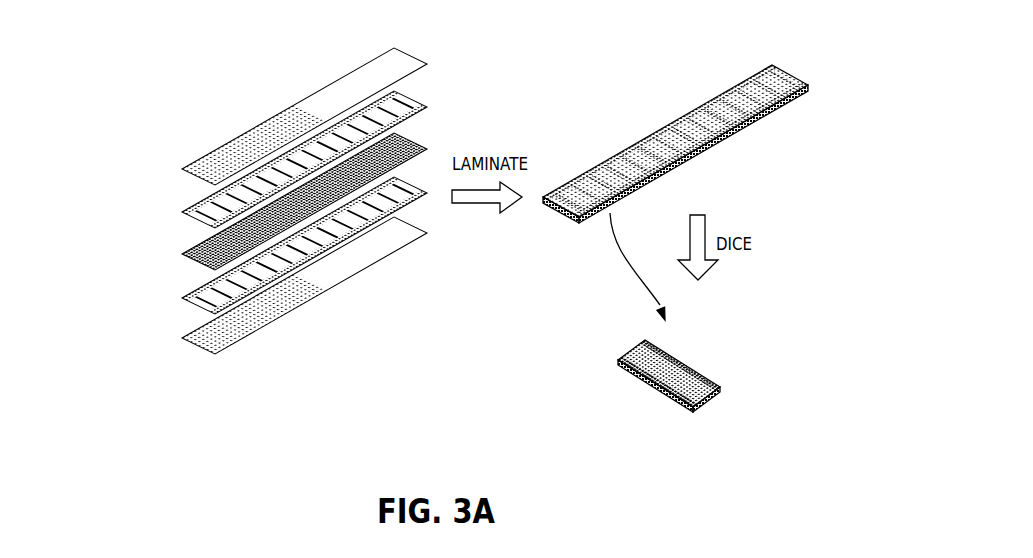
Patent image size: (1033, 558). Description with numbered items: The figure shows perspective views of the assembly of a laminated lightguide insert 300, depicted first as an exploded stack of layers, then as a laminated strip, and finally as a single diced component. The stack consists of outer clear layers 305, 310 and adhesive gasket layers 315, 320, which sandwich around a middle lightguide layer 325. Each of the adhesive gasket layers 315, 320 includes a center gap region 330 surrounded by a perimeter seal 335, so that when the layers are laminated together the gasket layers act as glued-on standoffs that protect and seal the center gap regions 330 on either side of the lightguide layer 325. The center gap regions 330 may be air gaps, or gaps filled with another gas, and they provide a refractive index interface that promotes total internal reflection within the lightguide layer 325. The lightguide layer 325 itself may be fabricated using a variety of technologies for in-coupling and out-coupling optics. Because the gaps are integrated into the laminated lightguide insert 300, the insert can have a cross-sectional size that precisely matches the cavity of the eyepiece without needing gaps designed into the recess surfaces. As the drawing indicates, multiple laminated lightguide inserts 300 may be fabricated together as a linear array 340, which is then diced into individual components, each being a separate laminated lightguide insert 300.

The laminated lightguide insert 300 is at (707, 399).
The outer clear layer 305 is at (306, 322).
The outer clear layer 310 is at (314, 101).
The adhesive gasket layer 315 is at (300, 272).
The adhesive gasket layer 320 is at (429, 97).
The lightguide layer 325 is at (177, 246).
The center gap region 330 is at (213, 393).
The perimeter seal 335 is at (413, 204).
The linear array 340 is at (668, 80).